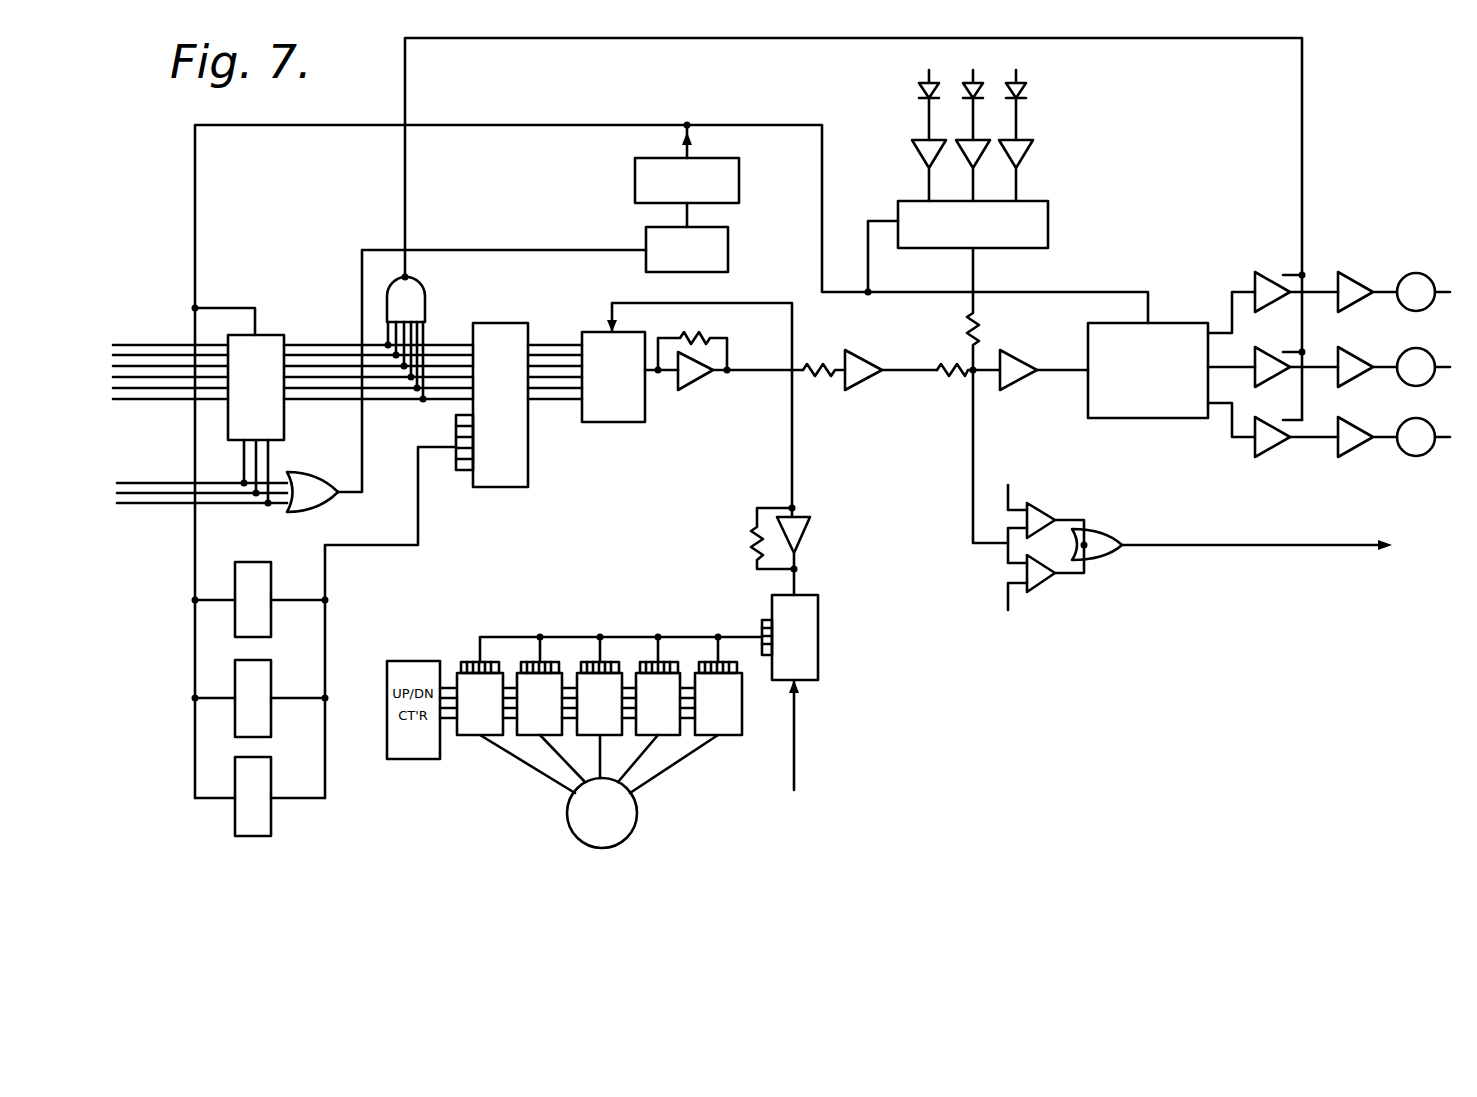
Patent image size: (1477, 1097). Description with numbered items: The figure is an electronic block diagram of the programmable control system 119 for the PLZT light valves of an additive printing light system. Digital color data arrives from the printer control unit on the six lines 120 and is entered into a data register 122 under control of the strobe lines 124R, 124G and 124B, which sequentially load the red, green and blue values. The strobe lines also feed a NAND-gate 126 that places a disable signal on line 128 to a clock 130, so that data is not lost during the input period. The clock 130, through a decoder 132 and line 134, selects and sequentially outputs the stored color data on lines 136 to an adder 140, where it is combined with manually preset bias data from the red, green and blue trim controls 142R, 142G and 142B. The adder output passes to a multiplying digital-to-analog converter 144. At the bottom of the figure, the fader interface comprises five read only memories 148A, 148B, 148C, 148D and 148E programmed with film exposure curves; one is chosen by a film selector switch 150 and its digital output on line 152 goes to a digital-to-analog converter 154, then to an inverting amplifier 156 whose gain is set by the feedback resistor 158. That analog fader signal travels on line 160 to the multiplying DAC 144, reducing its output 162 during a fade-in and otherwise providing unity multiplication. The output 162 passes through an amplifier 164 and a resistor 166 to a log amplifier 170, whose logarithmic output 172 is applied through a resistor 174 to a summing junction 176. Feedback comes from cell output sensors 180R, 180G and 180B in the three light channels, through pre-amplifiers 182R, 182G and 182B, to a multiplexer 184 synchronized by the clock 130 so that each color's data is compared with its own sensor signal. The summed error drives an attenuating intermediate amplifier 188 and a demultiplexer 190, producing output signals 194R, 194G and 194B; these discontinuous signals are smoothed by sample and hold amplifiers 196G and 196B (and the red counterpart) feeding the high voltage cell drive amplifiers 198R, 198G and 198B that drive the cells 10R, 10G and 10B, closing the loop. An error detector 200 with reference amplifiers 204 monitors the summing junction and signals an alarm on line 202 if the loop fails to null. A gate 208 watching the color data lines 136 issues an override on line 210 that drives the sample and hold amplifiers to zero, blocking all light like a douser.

The PLZT cell 10R is at (1412, 274).
The PLZT cell 10G is at (1414, 349).
The PLZT cell 10B is at (1420, 430).
The control system 119 is at (907, 636).
The six lines 120 is at (137, 342).
The data register 122 is at (272, 335).
The strobe line 124R is at (122, 483).
The strobe line 124G is at (147, 493).
The strobe line 124B is at (135, 508).
The NAND-gate 126 is at (328, 502).
The disable line 128 is at (458, 250).
The clock 130 is at (728, 250).
The decoder 132 is at (739, 172).
The decoder output line 134 is at (318, 125).
The color data lines 136 is at (371, 338).
The adder 140 is at (500, 323).
The red trim control 142R is at (271, 578).
The green trim control 142G is at (271, 676).
The blue trim control 142B is at (271, 778).
The multiplying digital-to-analog converter 144 is at (645, 415).
The read only memory 148A is at (470, 738).
The read only memory 148B is at (523, 737).
The read only memory 148C is at (588, 737).
The read only memory 148D is at (668, 737).
The read only memory 148E is at (735, 737).
The film selector switch 150 is at (608, 848).
The ROM output line 152 is at (568, 637).
The digital-to-analog converter 154 is at (812, 612).
The inverting amplifier 156 is at (808, 540).
The feedback resistor 158 is at (752, 525).
The fader output line 160 is at (748, 303).
The multiplying DAC output 162 is at (655, 376).
The amplifier 164 is at (700, 383).
The resistor 166 is at (818, 365).
The log amplifier 170 is at (866, 390).
The log amplifier output 172 is at (908, 370).
The resistor 174 is at (952, 376).
The summing junction 176 is at (970, 376).
The cell output sensor 180R is at (922, 80).
The cell output sensor 180G is at (975, 76).
The cell output sensor 180B is at (1026, 92).
The pre-amplifier 182R is at (921, 150).
The pre-amplifier 182G is at (985, 155).
The pre-amplifier 182B is at (1030, 150).
The multiplexer 184 is at (1020, 240).
The intermediate amplifier 188 is at (1026, 355).
The demultiplexer 190 is at (1088, 400).
The output signal 194R is at (1240, 292).
The output signal 194G is at (1240, 368).
The output signal 194B is at (1240, 438).
The sample and hold amplifier 196G is at (1270, 338).
The sample and hold amplifier 196B is at (1275, 450).
The PLZT cell drive amplifier 198R is at (1352, 272).
The PLZT cell drive amplifier 198G is at (1345, 376).
The PLZT cell drive amplifier 198B is at (1360, 456).
The error detector 200 is at (1100, 531).
The alarm line 202 is at (1262, 545).
The amplifiers 204 is at (1038, 505).
The gate 208 is at (418, 300).
The override line 210 is at (553, 39).